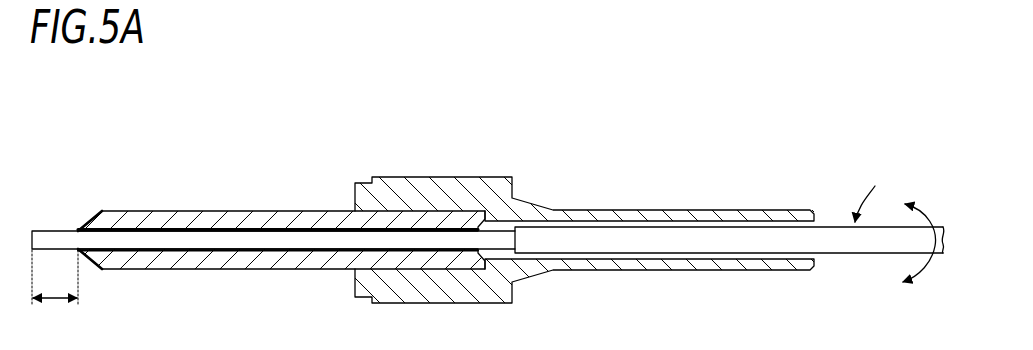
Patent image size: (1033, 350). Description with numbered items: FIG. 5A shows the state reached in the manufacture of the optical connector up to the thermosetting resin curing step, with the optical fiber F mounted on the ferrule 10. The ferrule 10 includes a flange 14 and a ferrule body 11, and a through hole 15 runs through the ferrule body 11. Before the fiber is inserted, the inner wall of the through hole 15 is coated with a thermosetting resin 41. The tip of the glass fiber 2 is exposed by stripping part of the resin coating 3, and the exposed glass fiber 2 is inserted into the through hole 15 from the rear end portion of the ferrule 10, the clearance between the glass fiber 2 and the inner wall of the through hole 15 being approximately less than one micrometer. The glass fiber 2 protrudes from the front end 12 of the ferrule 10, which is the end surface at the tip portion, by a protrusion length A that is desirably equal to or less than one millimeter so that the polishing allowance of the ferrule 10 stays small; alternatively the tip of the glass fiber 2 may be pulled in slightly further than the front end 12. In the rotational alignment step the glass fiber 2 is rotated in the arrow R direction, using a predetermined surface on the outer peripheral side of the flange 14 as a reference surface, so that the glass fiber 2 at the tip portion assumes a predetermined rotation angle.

The ferrule 10 is at (576, 153).
The flange 14 is at (473, 185).
The ferrule body 11 is at (185, 211).
The front end 12 is at (78, 231).
The thermosetting resin 41 is at (224, 229).
The through hole 15 is at (283, 230).
The glass fiber 2 is at (180, 250).
The resin coating 3 is at (735, 248).
The protrusion length A is at (55, 289).
The optical fiber F is at (868, 190).
The arrow R direction R is at (919, 227).